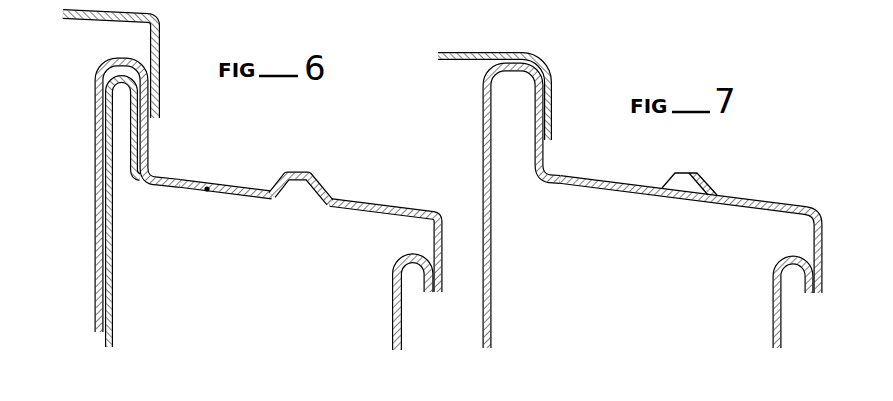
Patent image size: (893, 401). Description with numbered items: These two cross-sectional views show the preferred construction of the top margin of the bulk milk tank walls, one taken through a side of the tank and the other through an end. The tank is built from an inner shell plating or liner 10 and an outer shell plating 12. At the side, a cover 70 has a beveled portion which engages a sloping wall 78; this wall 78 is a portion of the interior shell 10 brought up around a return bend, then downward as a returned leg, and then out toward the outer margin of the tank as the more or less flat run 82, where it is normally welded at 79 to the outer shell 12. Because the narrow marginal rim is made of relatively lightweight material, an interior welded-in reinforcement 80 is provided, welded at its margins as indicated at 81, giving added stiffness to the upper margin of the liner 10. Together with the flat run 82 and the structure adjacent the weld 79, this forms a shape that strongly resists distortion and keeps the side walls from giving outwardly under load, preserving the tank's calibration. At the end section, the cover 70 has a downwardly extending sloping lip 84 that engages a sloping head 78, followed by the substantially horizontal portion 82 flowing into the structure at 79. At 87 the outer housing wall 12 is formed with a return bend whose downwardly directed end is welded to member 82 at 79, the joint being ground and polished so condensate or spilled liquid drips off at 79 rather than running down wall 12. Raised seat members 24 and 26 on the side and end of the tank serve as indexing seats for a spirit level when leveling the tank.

In FIG. 6, the inner shell plating 10 is at (95, 232).
In FIG. 7, the inner shell plating 10 is at (482, 136).
In FIG. 6, the outer shell plating 12 is at (392, 336).
In FIG. 7, the outer shell plating 12 is at (772, 316).
In FIG. 6, the raised seat member 24 is at (298, 173).
In FIG. 7, the raised seat member 26 is at (690, 183).
In FIG. 6, the cover 70 is at (160, 36).
In FIG. 7, the cover 70 is at (525, 53).
In FIG. 6, the sloping wall 78 is at (160, 126).
In FIG. 7, the sloping wall 78 is at (577, 140).
In FIG. 6, the weld 79 is at (432, 294).
In FIG. 7, the weld 79 is at (812, 296).
In FIG. 6, the interior welded-in reinforcement 80 is at (116, 224).
In FIG. 6, the weld 81 is at (207, 191).
In FIG. 6, the flat run 82 is at (378, 203).
In FIG. 7, the flat run 82 is at (768, 207).
In FIG. 7, the sloping lip 84 is at (552, 103).
In FIG. 6, the return bend 87 is at (410, 255).
In FIG. 7, the return bend 87 is at (792, 268).